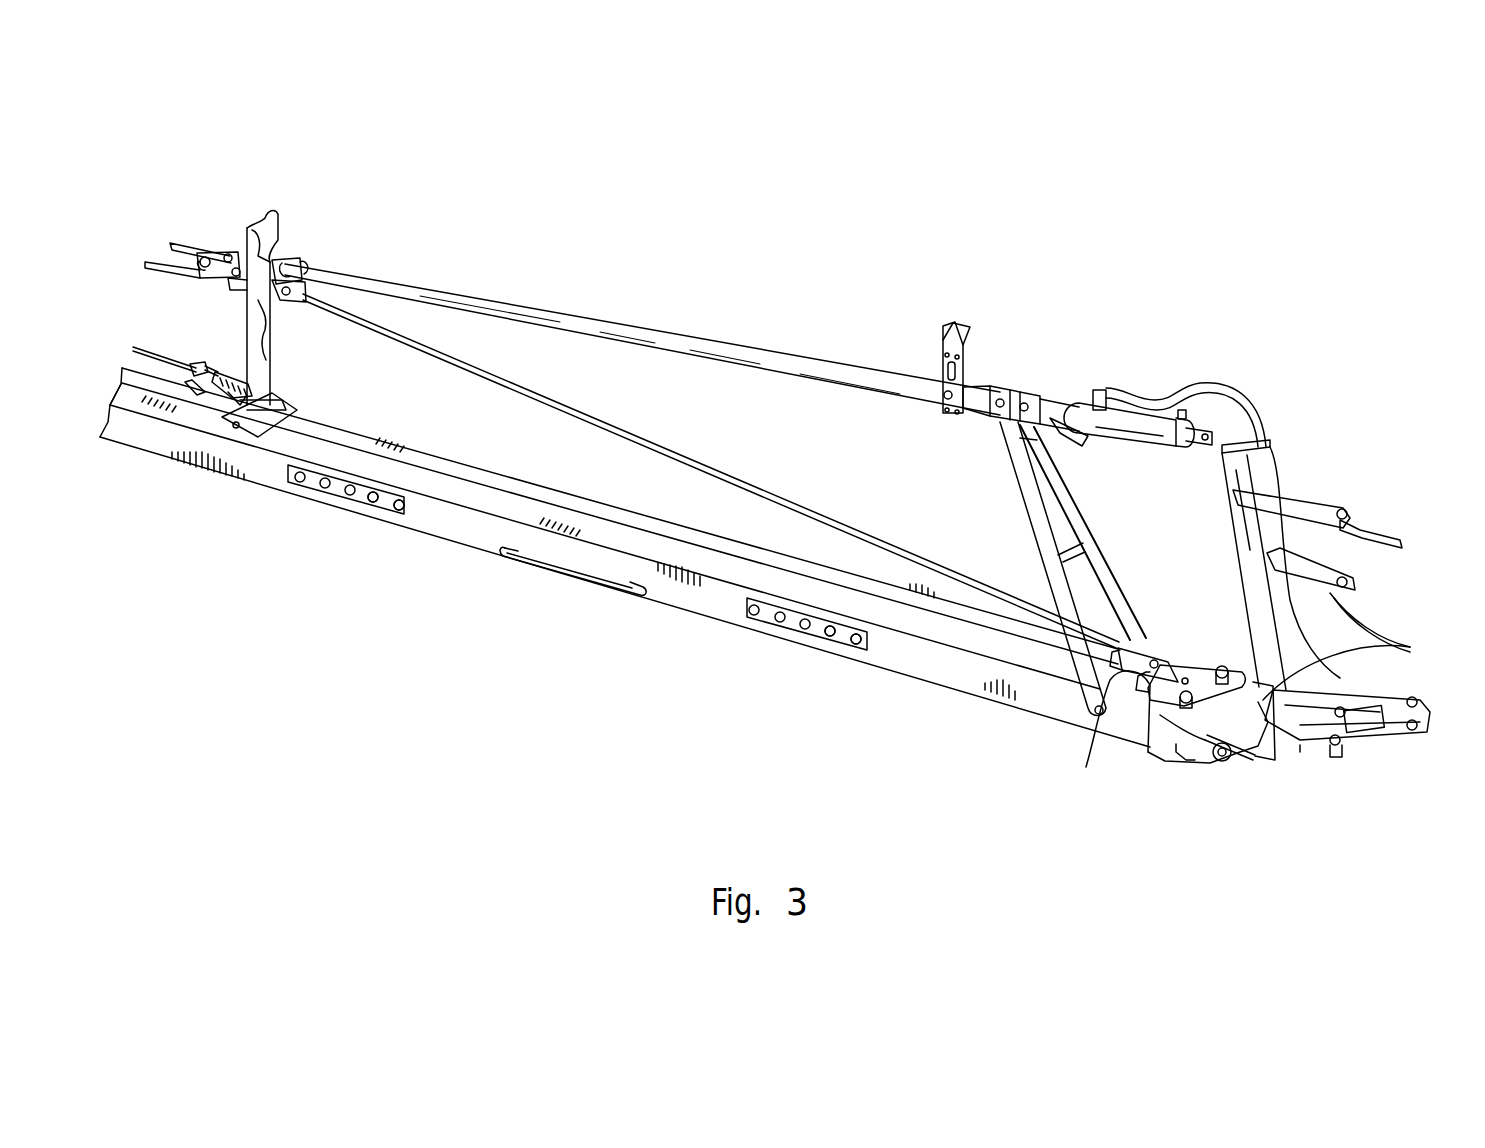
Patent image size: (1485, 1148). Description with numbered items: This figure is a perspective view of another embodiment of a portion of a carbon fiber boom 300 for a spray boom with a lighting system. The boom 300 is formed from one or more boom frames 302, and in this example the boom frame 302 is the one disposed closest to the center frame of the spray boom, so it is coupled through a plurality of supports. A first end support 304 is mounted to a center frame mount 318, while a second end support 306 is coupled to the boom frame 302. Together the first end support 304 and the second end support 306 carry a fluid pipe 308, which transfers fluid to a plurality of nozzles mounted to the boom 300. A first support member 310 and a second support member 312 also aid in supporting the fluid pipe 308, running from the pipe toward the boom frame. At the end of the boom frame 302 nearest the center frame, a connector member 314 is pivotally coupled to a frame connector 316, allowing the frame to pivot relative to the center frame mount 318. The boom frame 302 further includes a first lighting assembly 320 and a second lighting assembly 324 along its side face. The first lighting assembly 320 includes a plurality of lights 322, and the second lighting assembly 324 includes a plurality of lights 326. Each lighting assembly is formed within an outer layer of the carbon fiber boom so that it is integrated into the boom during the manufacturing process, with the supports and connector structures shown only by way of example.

The carbon fiber boom 300 is at (1201, 197).
The boom frame 302 is at (125, 433).
The first end support 304 is at (1293, 461).
The second end support 306 is at (258, 356).
The fluid pipe 308 is at (655, 340).
The first support member 310 is at (1068, 508).
The second support member 312 is at (778, 490).
The connector member 314 is at (1120, 720).
The frame connector 316 is at (1193, 762).
The center frame mount 318 is at (1367, 703).
The first lighting assembly 320 is at (762, 618).
The lights 322 is at (854, 642).
The second lighting assembly 324 is at (308, 485).
The lights 326 is at (398, 508).